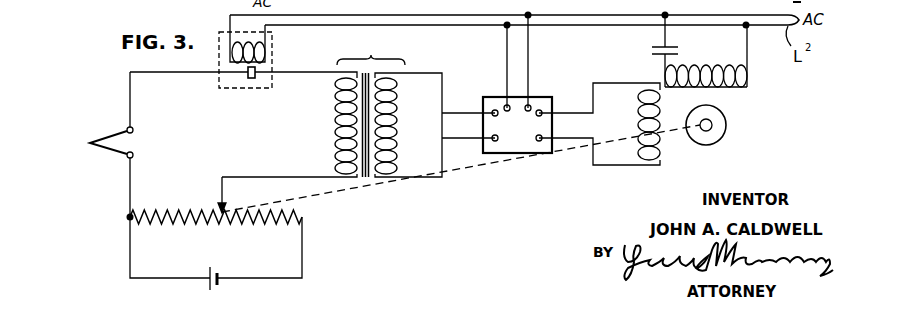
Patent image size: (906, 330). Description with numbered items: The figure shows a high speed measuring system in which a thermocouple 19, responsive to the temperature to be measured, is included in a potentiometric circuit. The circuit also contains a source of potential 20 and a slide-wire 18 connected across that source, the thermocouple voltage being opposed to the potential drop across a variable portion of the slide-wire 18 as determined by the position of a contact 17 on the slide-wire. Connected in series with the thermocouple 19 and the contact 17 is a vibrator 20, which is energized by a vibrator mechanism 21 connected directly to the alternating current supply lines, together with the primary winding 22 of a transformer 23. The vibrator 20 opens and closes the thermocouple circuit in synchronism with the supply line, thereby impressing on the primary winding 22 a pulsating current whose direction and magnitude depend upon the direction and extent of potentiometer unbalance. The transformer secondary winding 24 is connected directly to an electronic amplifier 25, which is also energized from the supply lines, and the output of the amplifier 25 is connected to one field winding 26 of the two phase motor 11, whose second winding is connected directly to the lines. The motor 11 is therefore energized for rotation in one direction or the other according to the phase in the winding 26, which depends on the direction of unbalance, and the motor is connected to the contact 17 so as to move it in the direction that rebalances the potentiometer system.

The two phase motor 11 is at (727, 121).
The contact 17 is at (222, 204).
The slide-wire 18 is at (167, 211).
The thermocouple 19 is at (112, 132).
The source of potential / vibrator 20 is at (243, 74).
The vibrator mechanism 21 is at (266, 56).
The primary winding 22 is at (336, 122).
The transformer 23 is at (371, 106).
The transformer secondary winding 24 is at (393, 132).
The electronic amplifier 25 is at (547, 97).
The field winding 26 is at (638, 106).